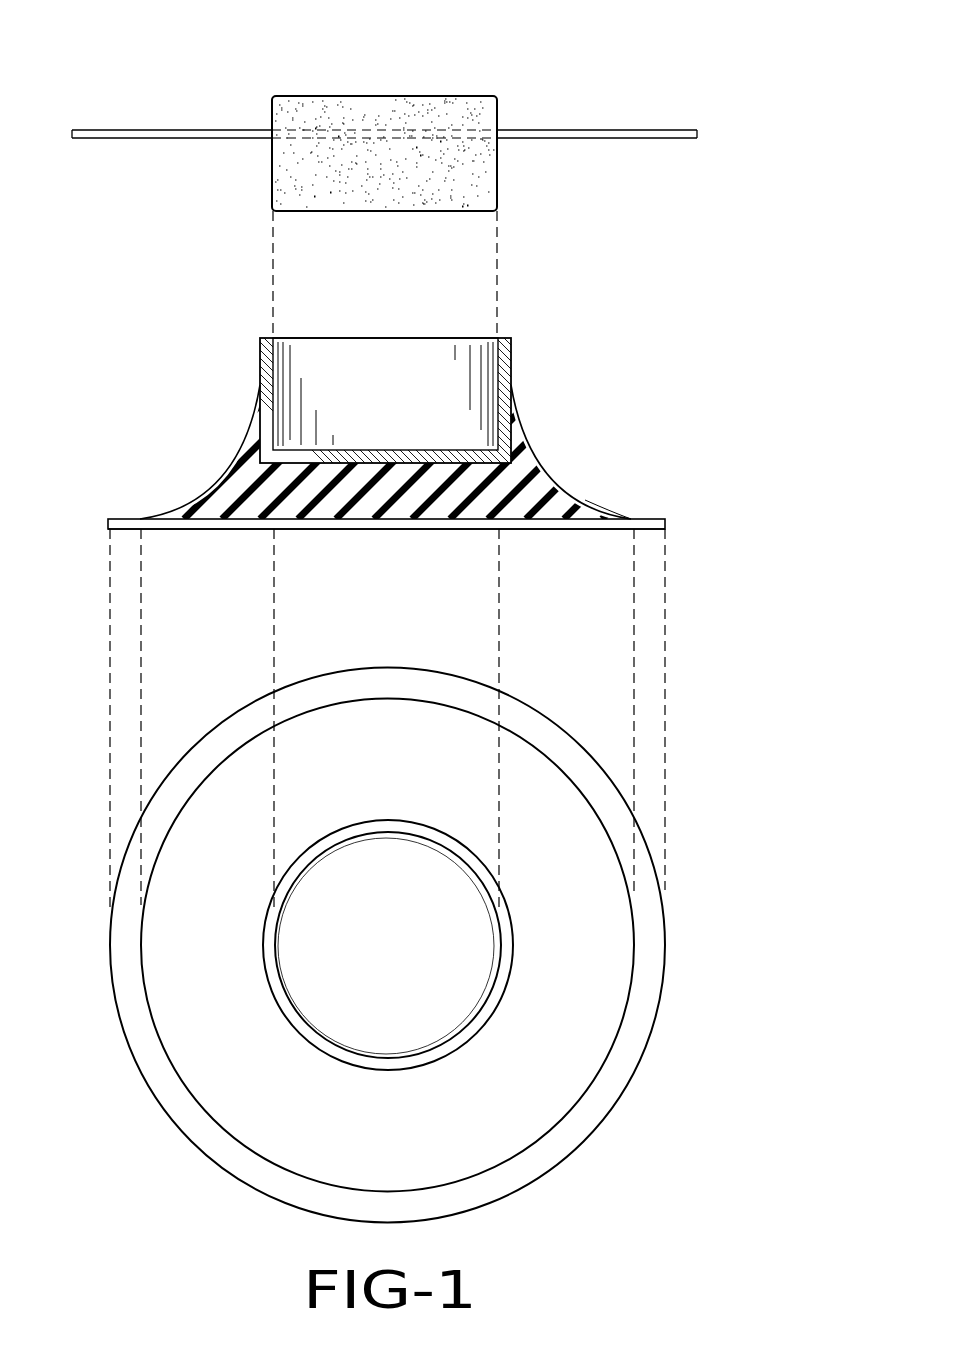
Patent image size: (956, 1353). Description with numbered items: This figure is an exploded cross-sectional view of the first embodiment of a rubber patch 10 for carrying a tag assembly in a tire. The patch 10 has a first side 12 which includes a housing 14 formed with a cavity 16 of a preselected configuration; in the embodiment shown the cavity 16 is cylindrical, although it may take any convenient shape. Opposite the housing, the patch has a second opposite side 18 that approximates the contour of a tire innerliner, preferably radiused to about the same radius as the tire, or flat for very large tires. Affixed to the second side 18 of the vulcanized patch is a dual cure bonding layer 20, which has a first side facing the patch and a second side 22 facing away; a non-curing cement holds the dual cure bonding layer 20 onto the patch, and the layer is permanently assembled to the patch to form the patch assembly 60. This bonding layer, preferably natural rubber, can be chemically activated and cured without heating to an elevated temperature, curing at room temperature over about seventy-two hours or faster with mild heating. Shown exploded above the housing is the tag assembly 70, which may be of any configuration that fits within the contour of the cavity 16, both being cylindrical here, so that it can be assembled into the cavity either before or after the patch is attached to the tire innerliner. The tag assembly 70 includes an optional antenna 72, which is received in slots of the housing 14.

The rubber patch 10 is at (210, 465).
The first side 12 is at (555, 477).
The housing 14 is at (512, 359).
The cavity 16 is at (378, 388).
The second opposite side 18 is at (598, 513).
The dual cure bonding layer 20 is at (127, 522).
The second side 22 is at (375, 531).
The patch assembly 60 is at (672, 376).
The tag assembly 70 is at (375, 95).
The antenna 72 is at (585, 130).